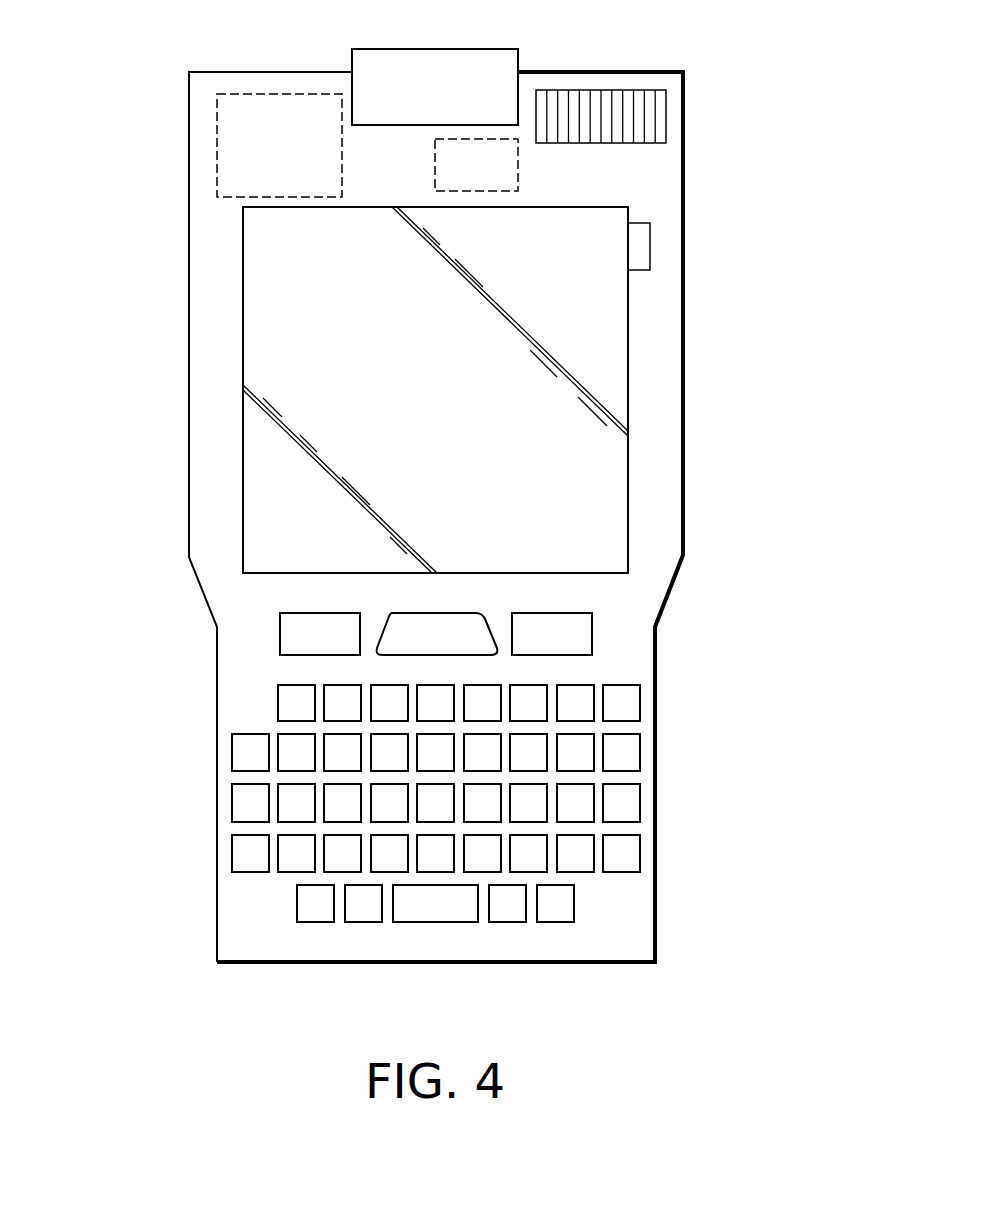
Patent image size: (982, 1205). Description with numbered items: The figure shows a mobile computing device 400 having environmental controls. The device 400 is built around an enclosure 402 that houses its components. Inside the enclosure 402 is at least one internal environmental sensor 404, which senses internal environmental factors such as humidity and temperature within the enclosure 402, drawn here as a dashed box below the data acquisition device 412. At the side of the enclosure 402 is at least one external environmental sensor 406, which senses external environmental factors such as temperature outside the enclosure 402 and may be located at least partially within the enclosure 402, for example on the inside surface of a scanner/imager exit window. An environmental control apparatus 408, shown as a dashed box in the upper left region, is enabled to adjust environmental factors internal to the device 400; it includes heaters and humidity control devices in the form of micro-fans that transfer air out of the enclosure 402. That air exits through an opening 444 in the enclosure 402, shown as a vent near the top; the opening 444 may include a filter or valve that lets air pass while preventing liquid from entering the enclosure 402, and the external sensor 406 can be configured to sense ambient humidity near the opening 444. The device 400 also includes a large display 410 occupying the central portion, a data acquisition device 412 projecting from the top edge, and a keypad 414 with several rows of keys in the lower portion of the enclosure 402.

The mobile computing device 400 is at (438, 484).
The enclosure 402 is at (212, 370).
The internal environmental sensor 404 is at (518, 170).
The external environmental sensor 406 is at (650, 247).
The environmental control apparatus 408 is at (258, 158).
The display 410 is at (416, 403).
The data acquisition device 412 is at (415, 99).
The keypad 414 is at (252, 705).
The opening 444 is at (617, 90).